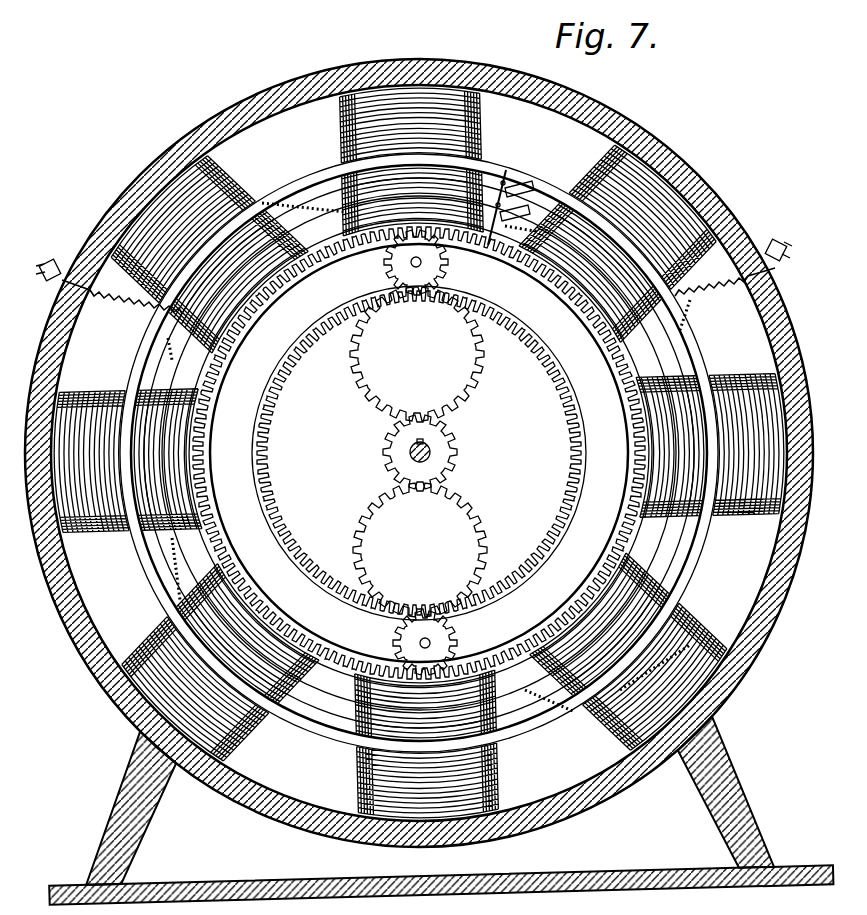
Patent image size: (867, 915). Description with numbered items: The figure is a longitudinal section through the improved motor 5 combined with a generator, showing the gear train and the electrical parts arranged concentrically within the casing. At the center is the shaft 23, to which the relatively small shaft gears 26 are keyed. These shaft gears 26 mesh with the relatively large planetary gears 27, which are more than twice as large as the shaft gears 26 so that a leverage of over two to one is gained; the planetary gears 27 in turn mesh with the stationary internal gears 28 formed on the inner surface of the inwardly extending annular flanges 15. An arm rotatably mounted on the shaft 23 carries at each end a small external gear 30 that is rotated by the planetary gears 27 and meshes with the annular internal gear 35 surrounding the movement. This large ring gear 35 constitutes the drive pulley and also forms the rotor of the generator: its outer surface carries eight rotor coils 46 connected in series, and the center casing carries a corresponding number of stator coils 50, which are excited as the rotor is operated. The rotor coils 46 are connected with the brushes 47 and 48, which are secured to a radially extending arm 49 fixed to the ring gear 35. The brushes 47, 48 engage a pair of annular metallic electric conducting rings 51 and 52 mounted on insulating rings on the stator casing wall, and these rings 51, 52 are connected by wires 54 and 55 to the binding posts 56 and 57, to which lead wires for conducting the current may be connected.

The improved motor 5 is at (419, 453).
The inwardly extending annular flanges 15 is at (573, 410).
The shaft 23 is at (432, 449).
The shaft gears 26 is at (446, 441).
The planetary gears 27 is at (468, 372).
The stationary internal gears 28 is at (588, 440).
The external gears 30 is at (440, 267).
The annular internal gear 35 is at (612, 337).
The rotor coils 46 is at (607, 240).
The brush 47 is at (530, 195).
The brush 48 is at (532, 230).
The radially extending arm 49 is at (502, 212).
The stator coils 50 is at (655, 262).
The annular metallic electric conducting ring 51 is at (288, 183).
The annular metallic electric conducting ring 52 is at (323, 193).
The wire 54 is at (140, 319).
The wire 55 is at (712, 302).
The binding post 56 is at (56, 262).
The binding post 57 is at (770, 244).